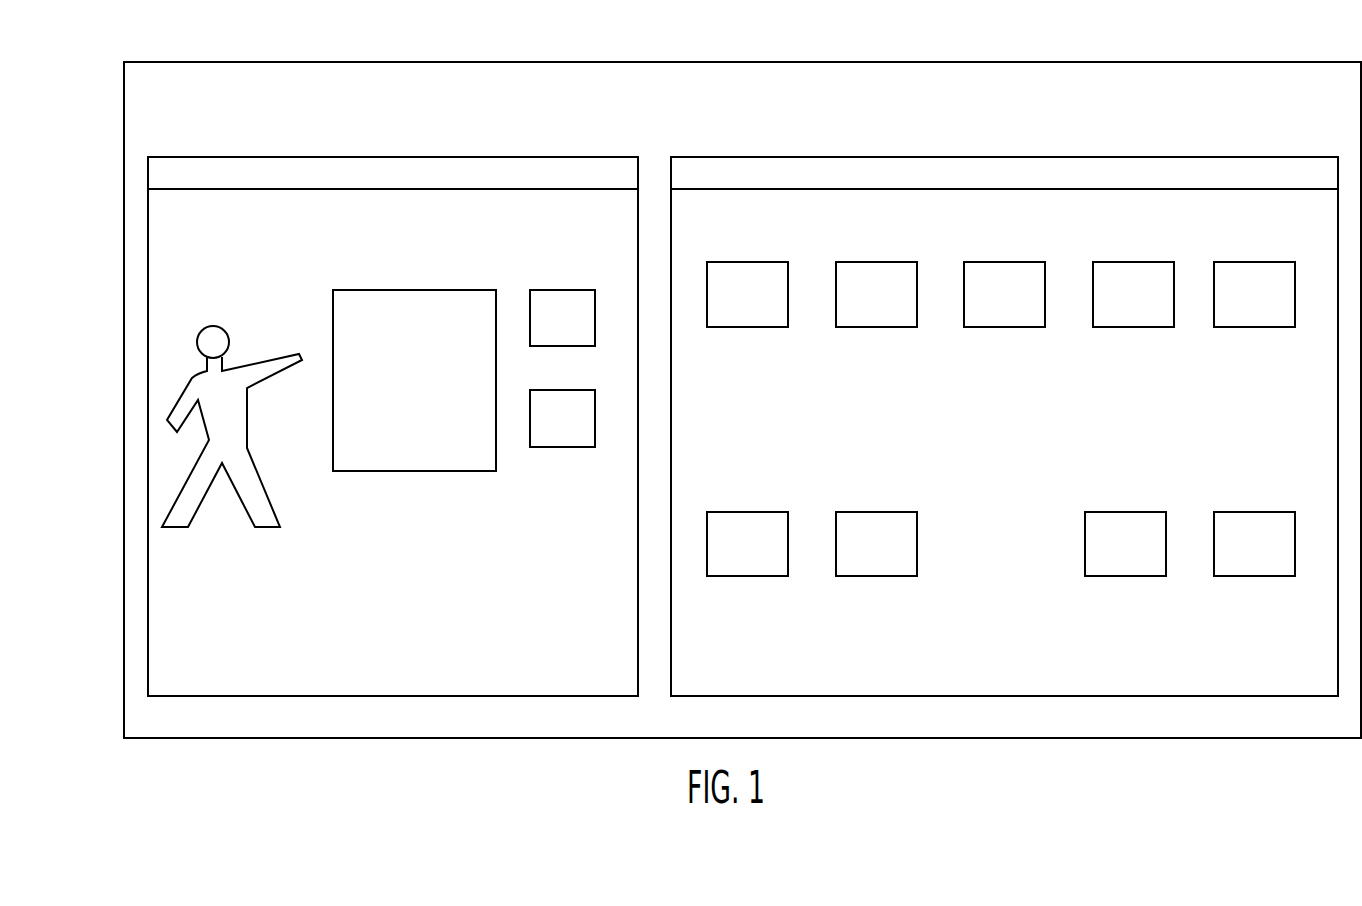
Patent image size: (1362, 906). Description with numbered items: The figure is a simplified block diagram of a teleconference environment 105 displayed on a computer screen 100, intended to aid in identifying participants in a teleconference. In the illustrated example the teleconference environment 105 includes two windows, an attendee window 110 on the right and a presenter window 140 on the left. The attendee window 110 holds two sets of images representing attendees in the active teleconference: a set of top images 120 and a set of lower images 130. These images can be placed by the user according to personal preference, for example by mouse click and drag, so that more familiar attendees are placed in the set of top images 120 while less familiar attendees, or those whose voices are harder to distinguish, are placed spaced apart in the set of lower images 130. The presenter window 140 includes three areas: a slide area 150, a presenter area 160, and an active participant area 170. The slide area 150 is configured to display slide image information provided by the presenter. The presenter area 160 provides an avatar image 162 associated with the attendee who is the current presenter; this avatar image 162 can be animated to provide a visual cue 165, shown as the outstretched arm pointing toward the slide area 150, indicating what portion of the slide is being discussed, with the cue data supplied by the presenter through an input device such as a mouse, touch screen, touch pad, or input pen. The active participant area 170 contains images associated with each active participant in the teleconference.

The computer screen 100 is at (708, 62).
The teleconference environment 105 is at (239, 114).
The attendee window 110 is at (1106, 157).
The set of top images 120 is at (762, 305).
The set of lower images 130 is at (762, 555).
The presenter window 140 is at (521, 157).
The slide area 150 is at (427, 381).
The presenter area 160 is at (285, 553).
The avatar image 162 is at (238, 424).
The visual cue 165 is at (276, 357).
The active participant area 170 is at (605, 473).